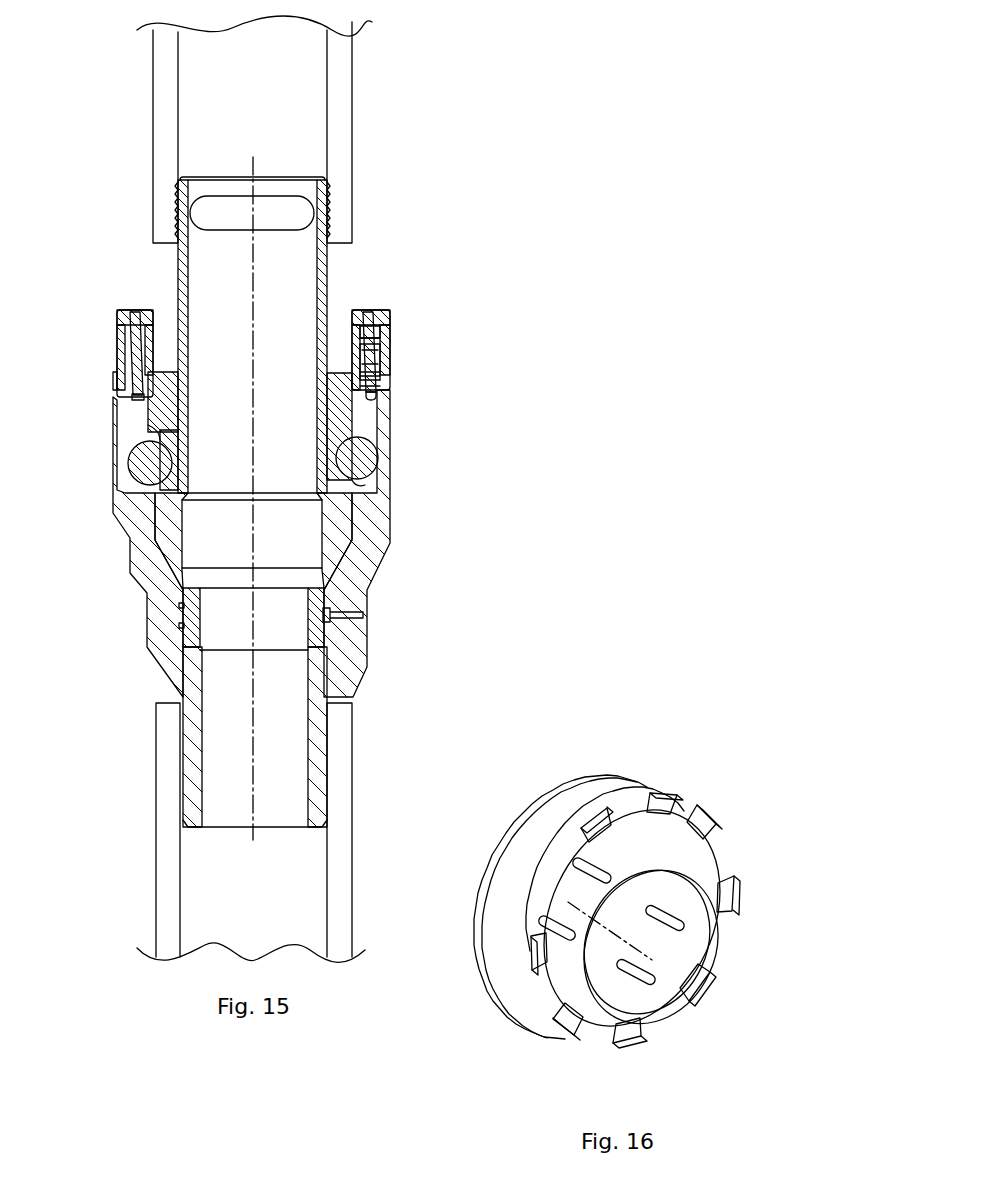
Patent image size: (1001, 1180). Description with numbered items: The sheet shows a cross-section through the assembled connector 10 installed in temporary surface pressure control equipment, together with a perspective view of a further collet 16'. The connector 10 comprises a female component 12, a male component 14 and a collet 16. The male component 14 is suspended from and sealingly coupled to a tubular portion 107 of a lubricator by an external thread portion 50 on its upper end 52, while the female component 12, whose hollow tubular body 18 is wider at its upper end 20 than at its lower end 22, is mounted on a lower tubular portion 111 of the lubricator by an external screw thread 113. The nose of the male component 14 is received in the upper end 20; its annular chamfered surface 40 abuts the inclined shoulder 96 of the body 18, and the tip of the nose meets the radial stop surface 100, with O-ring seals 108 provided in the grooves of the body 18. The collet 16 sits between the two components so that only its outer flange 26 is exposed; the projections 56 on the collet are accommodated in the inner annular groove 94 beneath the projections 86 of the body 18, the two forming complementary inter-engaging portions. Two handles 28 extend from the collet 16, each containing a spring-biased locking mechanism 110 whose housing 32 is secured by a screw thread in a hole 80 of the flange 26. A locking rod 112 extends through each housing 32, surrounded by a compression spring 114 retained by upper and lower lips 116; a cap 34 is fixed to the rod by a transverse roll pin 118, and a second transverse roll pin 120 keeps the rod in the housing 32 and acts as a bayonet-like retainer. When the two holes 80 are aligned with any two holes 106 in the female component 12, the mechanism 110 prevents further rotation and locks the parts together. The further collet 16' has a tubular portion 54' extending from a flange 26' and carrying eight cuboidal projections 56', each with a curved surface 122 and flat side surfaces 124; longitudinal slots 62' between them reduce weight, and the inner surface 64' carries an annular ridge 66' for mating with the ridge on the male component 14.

In FIG. 15, the connector 10 is at (368, 827).
In FIG. 15, the female component 12 is at (375, 510).
In FIG. 15, the male component 14 is at (323, 262).
In FIG. 15, the collet 16 is at (500, 500).
In FIG. 15, the body 18 is at (148, 627).
In FIG. 15, the upper end 20 is at (160, 296).
In FIG. 15, the lower end 22 is at (225, 843).
In FIG. 15, the outer flange 26 is at (156, 353).
In FIG. 15, the handle 28 is at (380, 299).
In FIG. 15, the housing 32 is at (390, 364).
In FIG. 15, the cap 34 is at (378, 318).
In FIG. 15, the annular chamfered surface 40 is at (172, 561).
In FIG. 15, the external thread portion 50 is at (169, 203).
In FIG. 15, the upper end 52 is at (303, 163).
In FIG. 15, the projection 56 is at (121, 472).
In FIG. 15, the hole 80 is at (126, 410).
In FIG. 15, the projection 86 is at (155, 457).
In FIG. 15, the inner annular groove 94 is at (144, 499).
In FIG. 15, the inclined shoulder 96 is at (161, 583).
In FIG. 15, the radial stop surface 100 is at (189, 651).
In FIG. 15, the hole 106 is at (148, 432).
In FIG. 15, the tubular portion 107 is at (165, 95).
In FIG. 15, the O-ring seal 108 is at (172, 606).
In FIG. 15, the spring-biased locking mechanism 110 is at (96, 310).
In FIG. 15, the lower tubular portion 111 is at (165, 862).
In FIG. 15, the locking rod 112 is at (378, 398).
In FIG. 15, the external screw thread 113 is at (326, 738).
In FIG. 15, the compression spring 114 is at (388, 375).
In FIG. 15, the lip 116 is at (390, 338).
In FIG. 15, the transverse roll pin 118 is at (390, 326).
In FIG. 15, the second transverse roll pin 120 is at (390, 355).
In FIG. 16, the curved surface 122 is at (648, 845).
In FIG. 16, the side surface 124 is at (677, 835).
In FIG. 16, the further collet 16' is at (593, 916).
In FIG. 16, the flange 26' is at (593, 845).
In FIG. 16, the tubular portion 54' is at (560, 881).
In FIG. 16, the projection 56' is at (725, 849).
In FIG. 16, the longitudinal slot 62' is at (654, 959).
In FIG. 16, the inner surface 64' is at (711, 986).
In FIG. 16, the annular ridge 66' is at (675, 1028).